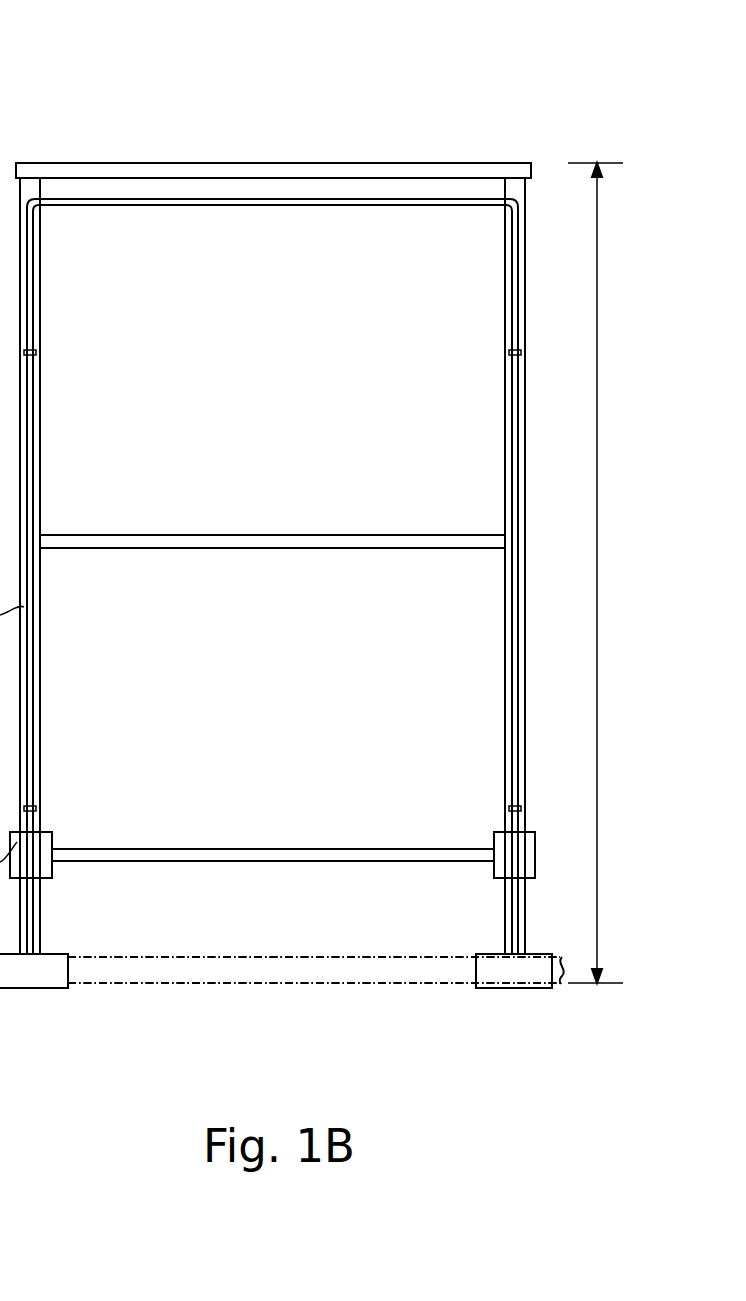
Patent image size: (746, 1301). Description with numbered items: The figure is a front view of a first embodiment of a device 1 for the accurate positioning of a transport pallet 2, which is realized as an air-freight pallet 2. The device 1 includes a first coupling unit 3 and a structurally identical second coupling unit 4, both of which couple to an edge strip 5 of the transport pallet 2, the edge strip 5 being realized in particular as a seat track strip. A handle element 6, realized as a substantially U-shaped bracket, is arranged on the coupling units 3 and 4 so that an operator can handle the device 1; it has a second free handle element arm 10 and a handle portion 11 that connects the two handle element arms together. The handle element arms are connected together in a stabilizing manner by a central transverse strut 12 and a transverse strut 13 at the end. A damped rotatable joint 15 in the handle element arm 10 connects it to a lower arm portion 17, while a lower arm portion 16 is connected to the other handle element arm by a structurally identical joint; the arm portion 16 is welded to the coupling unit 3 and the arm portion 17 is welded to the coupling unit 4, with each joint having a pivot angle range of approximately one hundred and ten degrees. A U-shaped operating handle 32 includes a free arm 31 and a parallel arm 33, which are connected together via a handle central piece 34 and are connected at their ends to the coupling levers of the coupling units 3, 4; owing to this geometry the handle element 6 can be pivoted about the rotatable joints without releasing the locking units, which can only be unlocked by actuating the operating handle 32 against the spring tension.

The device 1 is at (207, 105).
The transport pallet 2 is at (128, 972).
The first coupling unit 3 is at (29, 996).
The second coupling unit 4 is at (518, 994).
The edge strip 5 is at (163, 956).
The handle element 6 is at (459, 155).
The second free handle element arm 10 is at (522, 590).
The handle portion 11 is at (298, 165).
The central transverse strut 12 is at (240, 540).
The transverse strut 13 is at (170, 855).
The rotatable joint 15 is at (530, 840).
The lower arm portion 16 is at (37, 908).
The lower arm portion 17 is at (522, 900).
The free arm 31 is at (33, 422).
The operating handle 32 is at (325, 214).
The arm 33 is at (513, 385).
The handle central piece 34 is at (203, 207).